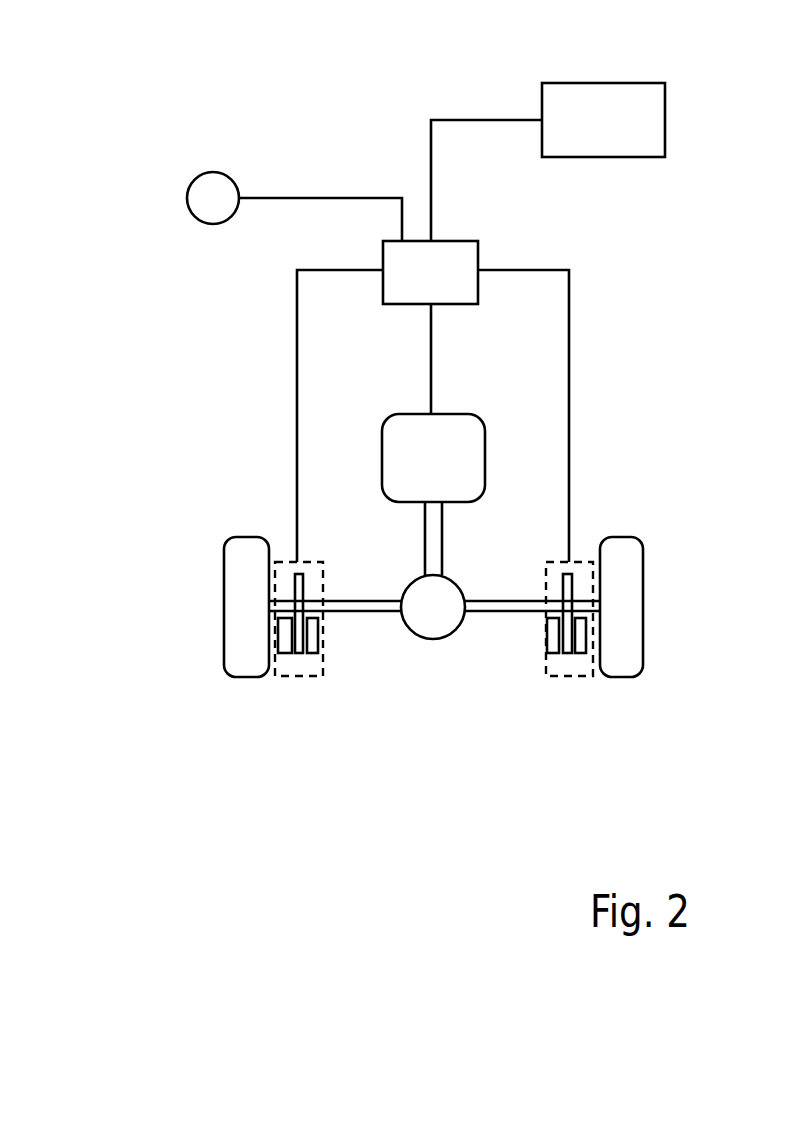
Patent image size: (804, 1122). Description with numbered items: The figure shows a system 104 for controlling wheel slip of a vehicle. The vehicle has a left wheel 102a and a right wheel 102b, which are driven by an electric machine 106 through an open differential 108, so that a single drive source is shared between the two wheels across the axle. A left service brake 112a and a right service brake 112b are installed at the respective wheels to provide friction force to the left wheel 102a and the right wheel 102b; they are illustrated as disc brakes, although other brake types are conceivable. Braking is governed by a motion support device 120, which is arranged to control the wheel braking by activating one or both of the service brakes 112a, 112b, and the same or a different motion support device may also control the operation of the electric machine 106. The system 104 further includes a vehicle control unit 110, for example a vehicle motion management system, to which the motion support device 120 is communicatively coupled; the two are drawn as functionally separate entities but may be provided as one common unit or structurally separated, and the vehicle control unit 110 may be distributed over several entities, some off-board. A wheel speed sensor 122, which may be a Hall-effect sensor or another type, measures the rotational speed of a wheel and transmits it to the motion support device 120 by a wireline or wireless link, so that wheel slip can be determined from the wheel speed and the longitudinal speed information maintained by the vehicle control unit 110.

The system for controlling wheel slip 104 is at (163, 58).
The vehicle control unit 110 is at (640, 157).
The motion support device 120 is at (383, 260).
The wheel speed sensor 122 is at (187, 200).
The electric machine 106 is at (382, 460).
The open differential 108 is at (433, 640).
The left wheel 102a is at (224, 620).
The right wheel 102b is at (643, 621).
The left service brake 112a is at (305, 677).
The right service brake 112b is at (577, 677).